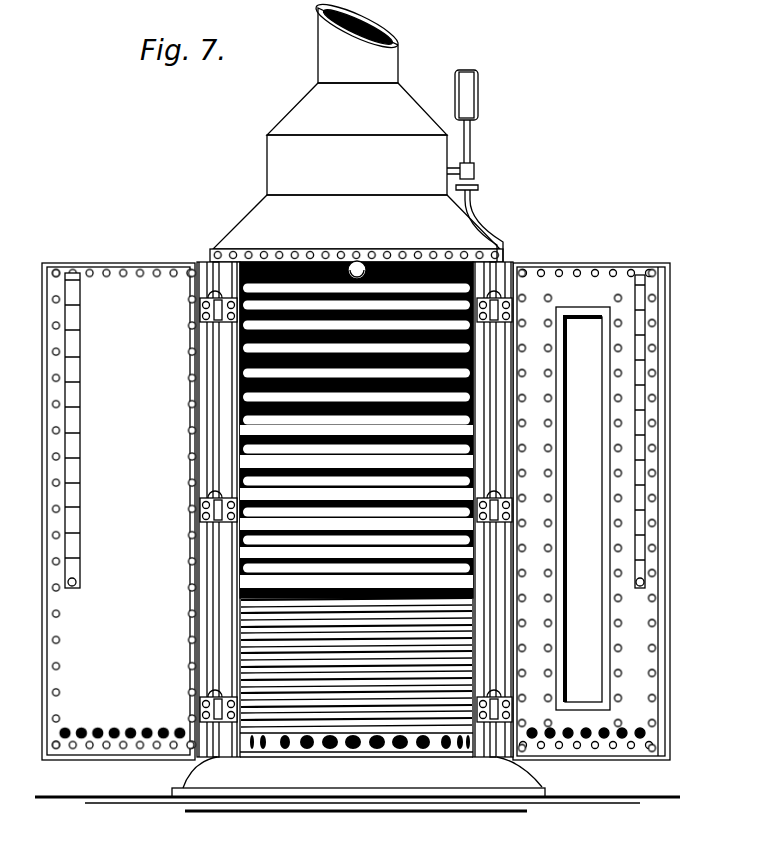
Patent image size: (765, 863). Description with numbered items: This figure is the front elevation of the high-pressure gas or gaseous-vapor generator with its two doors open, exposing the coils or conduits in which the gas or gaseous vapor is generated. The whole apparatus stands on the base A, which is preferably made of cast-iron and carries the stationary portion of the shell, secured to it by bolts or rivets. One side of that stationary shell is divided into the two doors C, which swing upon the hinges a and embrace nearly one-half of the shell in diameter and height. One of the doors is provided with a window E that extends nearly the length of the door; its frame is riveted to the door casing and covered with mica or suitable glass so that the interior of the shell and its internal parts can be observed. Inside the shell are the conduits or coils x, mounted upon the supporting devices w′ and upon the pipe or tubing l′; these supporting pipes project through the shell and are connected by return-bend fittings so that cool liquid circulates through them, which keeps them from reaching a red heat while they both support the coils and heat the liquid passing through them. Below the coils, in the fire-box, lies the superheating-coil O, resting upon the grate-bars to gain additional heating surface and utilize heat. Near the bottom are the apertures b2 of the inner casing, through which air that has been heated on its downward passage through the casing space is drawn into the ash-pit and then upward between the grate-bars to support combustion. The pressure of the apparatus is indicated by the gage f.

The gage f is at (475, 166).
The hinges a is at (203, 318).
The supporting devices w′ is at (75, 390).
The doors C is at (356, 510).
The window E is at (583, 508).
The conduits or coils x is at (356, 428).
The pipe or tubing l′ is at (356, 506).
The superheating-coil O is at (356, 662).
The apertures b2 is at (356, 755).
The base A is at (357, 784).